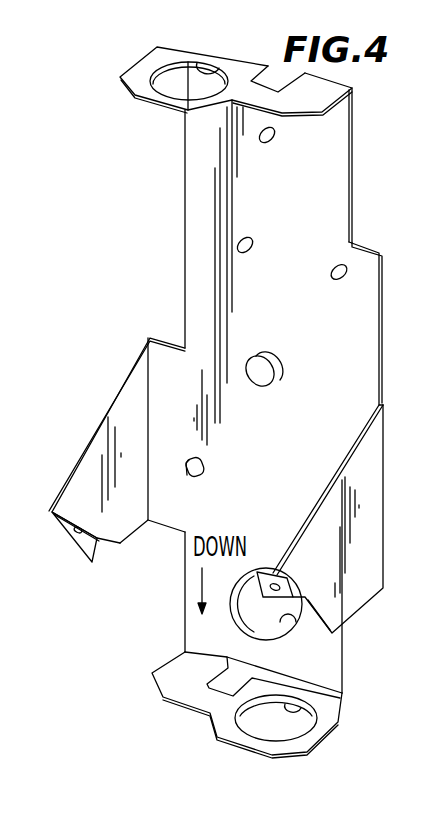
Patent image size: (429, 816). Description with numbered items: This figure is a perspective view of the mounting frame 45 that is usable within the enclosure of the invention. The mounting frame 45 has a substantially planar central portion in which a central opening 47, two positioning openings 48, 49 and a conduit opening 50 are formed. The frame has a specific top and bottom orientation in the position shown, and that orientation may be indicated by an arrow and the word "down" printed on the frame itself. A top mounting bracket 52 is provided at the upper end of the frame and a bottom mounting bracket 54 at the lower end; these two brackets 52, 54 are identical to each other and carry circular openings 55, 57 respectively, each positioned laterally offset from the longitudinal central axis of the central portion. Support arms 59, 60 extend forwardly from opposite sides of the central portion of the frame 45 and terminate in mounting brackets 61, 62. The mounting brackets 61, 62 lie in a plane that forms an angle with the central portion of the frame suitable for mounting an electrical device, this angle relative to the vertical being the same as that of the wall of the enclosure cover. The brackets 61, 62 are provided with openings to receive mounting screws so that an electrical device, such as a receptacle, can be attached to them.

The mounting frame 45 is at (352, 174).
The central opening 47 is at (275, 360).
The positioning opening 48 is at (205, 462).
The positioning opening 49 is at (333, 277).
The conduit opening 50 is at (283, 630).
The top mounting bracket 52 is at (138, 62).
The bottom mounting bracket 54 is at (212, 724).
The circular opening 55 is at (212, 72).
The circular opening 57 is at (316, 712).
The support arm 59 is at (112, 383).
The support arm 60 is at (348, 452).
The mounting bracket 61 is at (118, 542).
The mounting bracket 62 is at (277, 572).